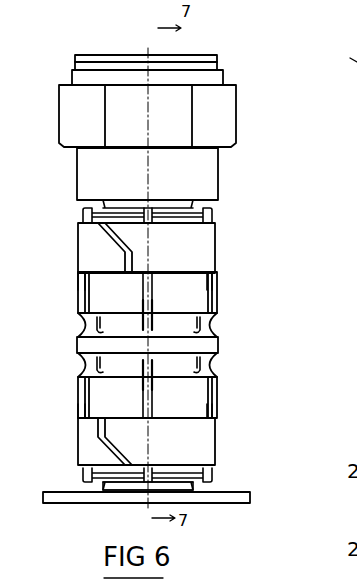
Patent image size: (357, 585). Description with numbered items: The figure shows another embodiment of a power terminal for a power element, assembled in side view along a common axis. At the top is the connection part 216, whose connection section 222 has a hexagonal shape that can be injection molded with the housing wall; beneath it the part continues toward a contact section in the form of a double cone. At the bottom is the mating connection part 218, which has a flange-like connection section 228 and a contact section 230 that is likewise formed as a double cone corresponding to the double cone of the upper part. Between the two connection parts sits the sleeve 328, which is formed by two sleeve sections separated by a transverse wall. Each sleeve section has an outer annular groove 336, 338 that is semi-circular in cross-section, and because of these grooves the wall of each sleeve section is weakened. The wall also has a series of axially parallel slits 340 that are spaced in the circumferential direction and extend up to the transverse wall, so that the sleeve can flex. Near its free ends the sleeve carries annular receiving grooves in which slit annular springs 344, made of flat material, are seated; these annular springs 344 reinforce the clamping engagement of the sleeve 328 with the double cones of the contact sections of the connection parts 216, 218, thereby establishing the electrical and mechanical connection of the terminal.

The connection part 216 is at (242, 64).
The connection section 222 is at (244, 112).
The contact section 230 is at (194, 182).
The slit annular spring 344 is at (195, 259).
The axially parallel slits 340 is at (157, 291).
The outer annular groove 336 is at (208, 323).
The outer annular groove 338 is at (208, 365).
The sleeve 328 is at (189, 334).
The connection section 228 is at (252, 494).
The connection part 218 is at (237, 511).